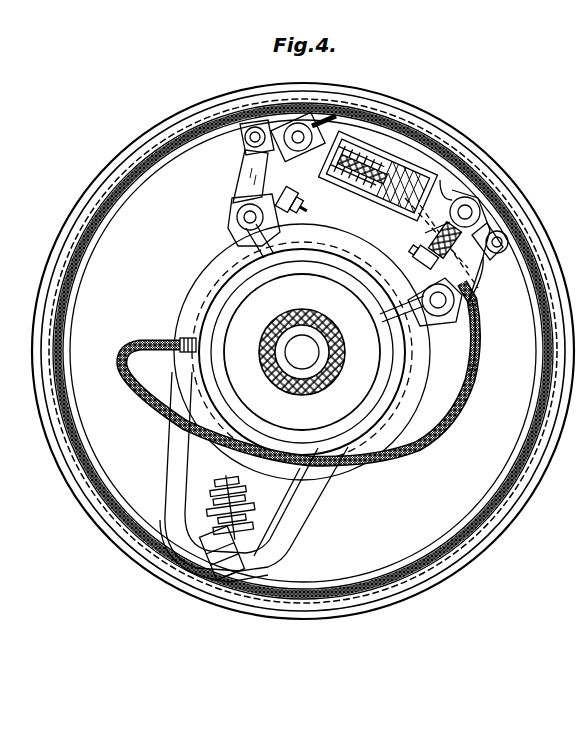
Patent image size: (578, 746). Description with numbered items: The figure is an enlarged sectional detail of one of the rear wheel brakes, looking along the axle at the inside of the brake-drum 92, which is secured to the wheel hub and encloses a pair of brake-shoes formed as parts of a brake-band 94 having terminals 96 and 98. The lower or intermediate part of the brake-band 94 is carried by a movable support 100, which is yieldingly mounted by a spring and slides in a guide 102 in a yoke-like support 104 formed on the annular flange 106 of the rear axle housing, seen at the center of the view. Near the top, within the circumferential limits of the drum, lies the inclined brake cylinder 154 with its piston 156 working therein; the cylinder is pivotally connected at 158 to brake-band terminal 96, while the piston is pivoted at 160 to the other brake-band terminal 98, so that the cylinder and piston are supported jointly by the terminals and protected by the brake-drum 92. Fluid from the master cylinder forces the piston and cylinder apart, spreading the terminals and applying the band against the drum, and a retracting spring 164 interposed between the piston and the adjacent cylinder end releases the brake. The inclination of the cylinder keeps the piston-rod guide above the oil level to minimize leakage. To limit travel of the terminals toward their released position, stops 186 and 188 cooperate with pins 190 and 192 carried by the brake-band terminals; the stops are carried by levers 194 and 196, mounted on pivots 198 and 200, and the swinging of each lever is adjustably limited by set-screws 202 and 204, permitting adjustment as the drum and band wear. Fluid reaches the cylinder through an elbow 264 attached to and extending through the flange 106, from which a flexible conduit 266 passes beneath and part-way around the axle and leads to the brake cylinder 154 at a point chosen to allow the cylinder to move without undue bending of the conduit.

The brake-drum 92 is at (432, 134).
The brake-band 94 is at (200, 562).
The brake-band terminal 96 is at (472, 206).
The brake-band terminal 98 is at (257, 101).
The movable support 100 is at (252, 496).
The guide 102 is at (272, 566).
The yoke-like support 104 is at (298, 512).
The annular flange 106 is at (210, 265).
The brake cylinder 154 is at (373, 148).
The piston 156 is at (410, 163).
The pivotal connection 158 is at (505, 210).
The pivot 160 is at (312, 122).
The spring 164 is at (362, 136).
The stop 186 is at (247, 148).
The stop 188 is at (484, 272).
The pin 190 is at (219, 100).
The pin 192 is at (504, 243).
The lever 194 is at (247, 178).
The lever 196 is at (478, 298).
The pivot 198 is at (238, 220).
The pivot 200 is at (478, 340).
The adjustable set-screw 202 is at (303, 203).
The adjustable set-screw 204 is at (430, 207).
The elbow 264 is at (184, 340).
The flexible conduit 266 is at (425, 448).